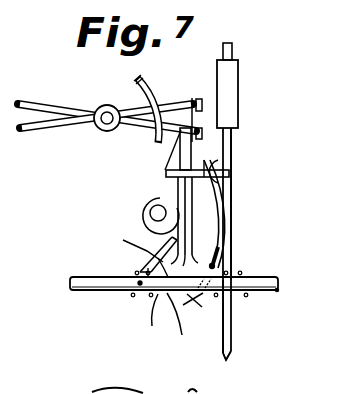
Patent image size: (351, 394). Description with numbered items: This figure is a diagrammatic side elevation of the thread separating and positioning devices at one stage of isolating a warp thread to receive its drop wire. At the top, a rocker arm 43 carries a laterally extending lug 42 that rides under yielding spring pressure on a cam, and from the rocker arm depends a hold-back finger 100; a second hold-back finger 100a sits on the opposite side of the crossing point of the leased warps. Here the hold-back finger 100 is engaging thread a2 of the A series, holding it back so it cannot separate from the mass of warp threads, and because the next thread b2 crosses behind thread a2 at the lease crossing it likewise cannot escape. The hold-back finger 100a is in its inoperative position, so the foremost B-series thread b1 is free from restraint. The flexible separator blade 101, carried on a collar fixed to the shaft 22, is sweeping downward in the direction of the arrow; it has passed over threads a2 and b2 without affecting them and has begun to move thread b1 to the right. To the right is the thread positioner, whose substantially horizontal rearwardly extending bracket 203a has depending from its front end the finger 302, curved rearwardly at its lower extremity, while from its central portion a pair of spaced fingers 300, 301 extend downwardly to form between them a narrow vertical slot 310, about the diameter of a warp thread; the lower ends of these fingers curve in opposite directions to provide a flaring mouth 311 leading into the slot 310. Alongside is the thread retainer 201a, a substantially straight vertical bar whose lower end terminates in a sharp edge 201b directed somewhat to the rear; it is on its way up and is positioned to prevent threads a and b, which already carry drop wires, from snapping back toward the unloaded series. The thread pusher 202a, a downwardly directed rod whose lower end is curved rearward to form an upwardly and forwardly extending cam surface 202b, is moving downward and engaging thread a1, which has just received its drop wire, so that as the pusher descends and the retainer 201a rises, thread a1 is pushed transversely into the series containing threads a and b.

The rocker arm 43 is at (48, 106).
The lug 42 is at (141, 79).
The slot 310 is at (178, 185).
The finger 300 is at (166, 180).
The finger 301 is at (205, 178).
The finger 302 is at (230, 243).
The shaft 22 is at (158, 198).
The hold-back finger 100 is at (129, 200).
The hold-back finger 100a is at (208, 198).
The flexible blade 101 is at (158, 320).
The bracket 203a is at (209, 188).
The thread pusher 202a is at (231, 221).
The cam surface 202b is at (232, 343).
The thread retainer 201a is at (232, 323).
The sharp edge 201b is at (224, 362).
The flaring mouth 311 is at (191, 324).
The warp thread a is at (245, 270).
The warp thread a1 is at (213, 272).
The warp thread a2 is at (135, 297).
The warp thread b is at (238, 296).
The warp thread b1 is at (149, 294).
The warp thread b2 is at (131, 251).